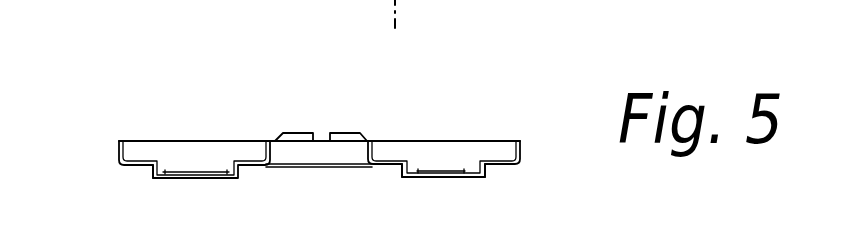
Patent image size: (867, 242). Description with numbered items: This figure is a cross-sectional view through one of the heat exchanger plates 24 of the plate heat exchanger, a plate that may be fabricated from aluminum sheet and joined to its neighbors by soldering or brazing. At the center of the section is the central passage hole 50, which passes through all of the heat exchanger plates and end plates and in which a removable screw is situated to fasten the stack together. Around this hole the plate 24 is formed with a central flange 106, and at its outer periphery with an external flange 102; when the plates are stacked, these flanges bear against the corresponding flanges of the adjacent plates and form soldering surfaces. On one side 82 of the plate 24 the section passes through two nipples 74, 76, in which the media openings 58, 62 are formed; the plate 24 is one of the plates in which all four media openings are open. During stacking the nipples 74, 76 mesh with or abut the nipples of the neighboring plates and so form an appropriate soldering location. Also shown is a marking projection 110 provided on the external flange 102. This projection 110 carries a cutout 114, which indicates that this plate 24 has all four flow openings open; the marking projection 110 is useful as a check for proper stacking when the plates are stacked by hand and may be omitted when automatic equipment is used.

The heat exchanger plate 24 is at (522, 152).
The central passage hole 50 is at (347, 150).
The media opening 58 is at (205, 177).
The media opening 62 is at (432, 176).
The nipple 74 is at (153, 170).
The nipple 76 is at (397, 175).
The side of the plate 82 is at (497, 168).
The external flange 102 is at (119, 157).
The central flange 106 is at (276, 142).
The marking projection 110 is at (357, 140).
The cutout 114 is at (315, 141).